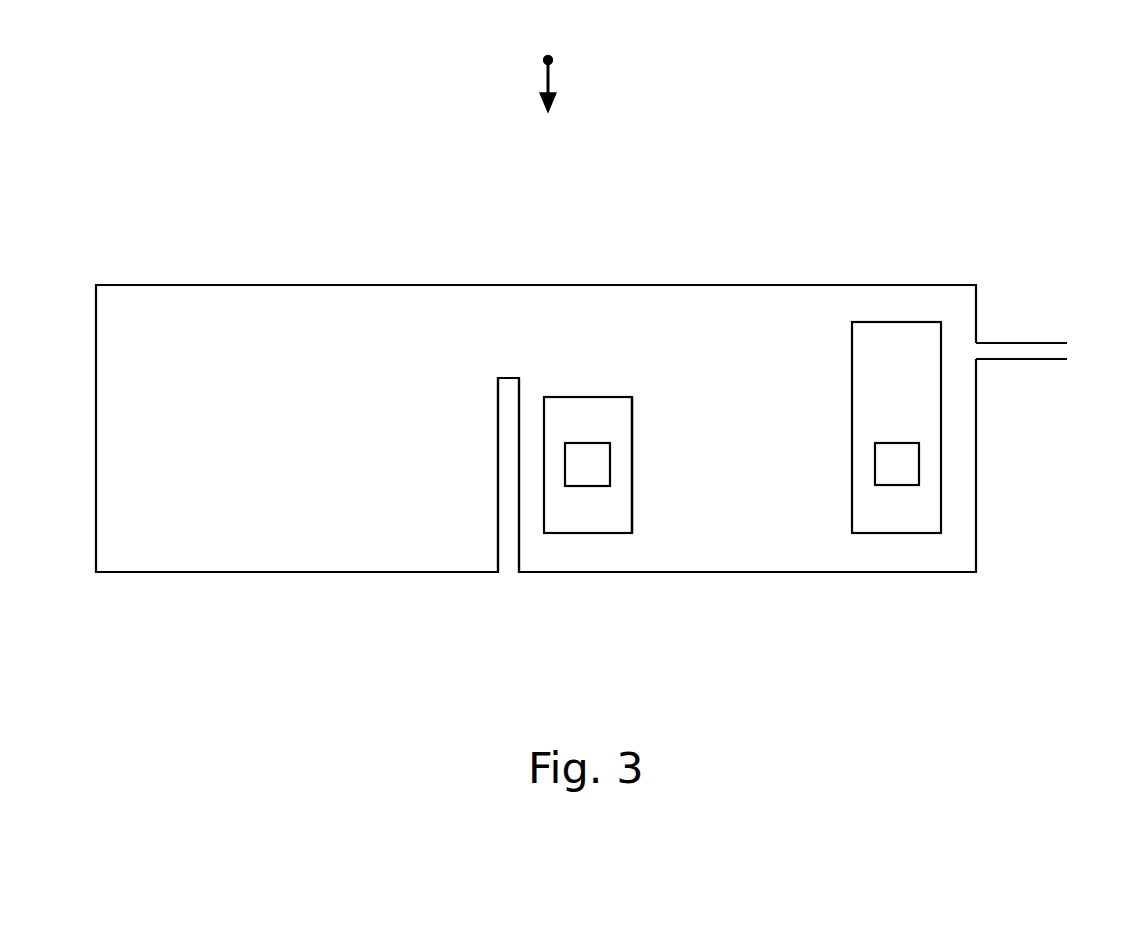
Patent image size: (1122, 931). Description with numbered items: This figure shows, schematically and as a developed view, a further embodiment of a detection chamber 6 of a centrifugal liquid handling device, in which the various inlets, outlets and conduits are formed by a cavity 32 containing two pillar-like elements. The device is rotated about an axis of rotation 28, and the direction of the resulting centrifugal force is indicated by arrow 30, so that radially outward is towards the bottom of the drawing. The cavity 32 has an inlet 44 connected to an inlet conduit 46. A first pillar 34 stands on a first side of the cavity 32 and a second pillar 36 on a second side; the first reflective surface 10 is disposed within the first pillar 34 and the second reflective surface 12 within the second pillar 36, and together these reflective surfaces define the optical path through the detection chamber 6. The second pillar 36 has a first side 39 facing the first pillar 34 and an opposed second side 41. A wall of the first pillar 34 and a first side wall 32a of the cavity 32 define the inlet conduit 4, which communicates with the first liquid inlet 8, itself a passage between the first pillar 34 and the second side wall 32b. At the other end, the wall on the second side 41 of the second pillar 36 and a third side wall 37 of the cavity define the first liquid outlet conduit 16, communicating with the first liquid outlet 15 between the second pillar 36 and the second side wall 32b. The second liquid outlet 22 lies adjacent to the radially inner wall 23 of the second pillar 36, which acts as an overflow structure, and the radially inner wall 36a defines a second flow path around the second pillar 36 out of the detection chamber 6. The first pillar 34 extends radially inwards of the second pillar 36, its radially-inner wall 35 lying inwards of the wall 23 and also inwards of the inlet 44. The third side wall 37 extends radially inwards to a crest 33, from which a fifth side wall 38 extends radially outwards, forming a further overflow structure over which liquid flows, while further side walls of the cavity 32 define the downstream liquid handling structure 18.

The inlet conduit 4 is at (963, 412).
The detection chamber 6 is at (703, 567).
The first liquid inlet 8 is at (848, 553).
The first reflective surface 10 is at (879, 455).
The second reflective surface 12 is at (602, 472).
The first liquid outlet 15 is at (633, 555).
The first liquid outlet conduit 16 is at (535, 522).
The downstream liquid handling structure 18 is at (205, 533).
The second liquid outlet 22 is at (627, 378).
The radially inner wall 23 is at (569, 390).
The axis of rotation 28 is at (552, 57).
The arrow 30 is at (552, 86).
The cavity 32 is at (817, 284).
The first side wall 32a is at (987, 515).
The second side wall 32b is at (604, 582).
The crest 33 is at (507, 370).
The first pillar 34 is at (941, 465).
The radially-inner wall 35 is at (916, 320).
The second pillar 36 is at (582, 533).
The radially inner wall 36a is at (598, 395).
The third side wall 37 is at (517, 445).
The fifth side wall 38 is at (493, 475).
The first side 39 is at (633, 448).
The second side 41 is at (538, 442).
The inlet 44 is at (973, 352).
The inlet conduit 46 is at (1056, 343).